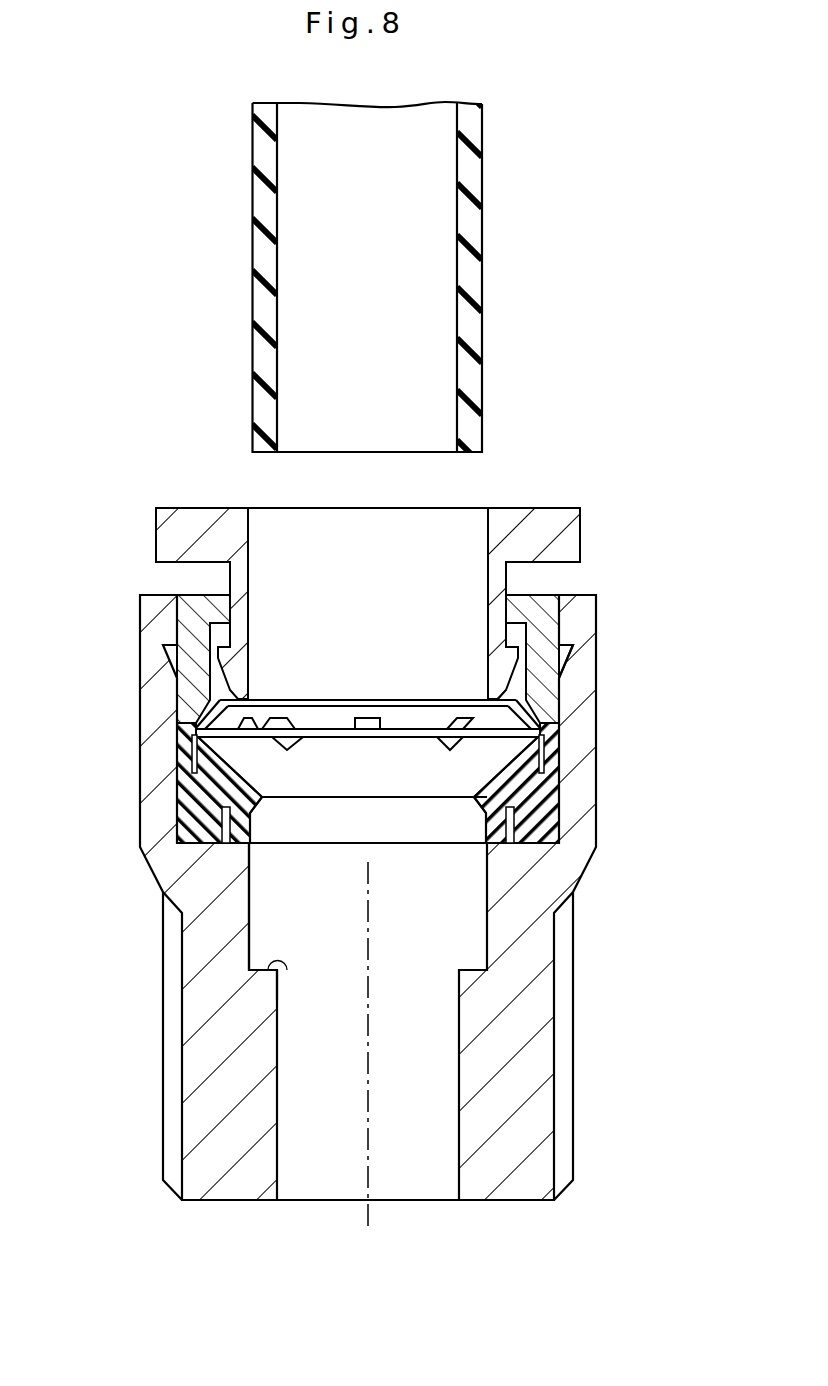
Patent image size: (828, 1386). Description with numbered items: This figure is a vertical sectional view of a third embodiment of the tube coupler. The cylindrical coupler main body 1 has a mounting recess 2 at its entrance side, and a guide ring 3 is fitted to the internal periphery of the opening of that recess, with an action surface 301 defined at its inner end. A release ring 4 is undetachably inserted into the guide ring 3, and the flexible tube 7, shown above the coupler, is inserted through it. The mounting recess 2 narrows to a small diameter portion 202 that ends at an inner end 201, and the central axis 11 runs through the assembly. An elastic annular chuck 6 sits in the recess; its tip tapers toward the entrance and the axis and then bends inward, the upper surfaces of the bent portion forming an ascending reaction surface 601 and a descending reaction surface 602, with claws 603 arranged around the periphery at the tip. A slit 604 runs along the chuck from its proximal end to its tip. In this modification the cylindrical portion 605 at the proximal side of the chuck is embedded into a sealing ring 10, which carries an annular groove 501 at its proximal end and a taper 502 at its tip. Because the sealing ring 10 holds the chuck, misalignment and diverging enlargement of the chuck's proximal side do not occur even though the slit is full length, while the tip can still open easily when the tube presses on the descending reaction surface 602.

The coupler main body 1 is at (399, 897).
The mounting recess 2 is at (340, 1035).
The guide ring 3 is at (552, 608).
The release ring 4 is at (550, 520).
The annular chuck 6 is at (363, 771).
The flexible tube 7 is at (253, 270).
The sealing ring 10 is at (557, 806).
The central axis 11 is at (372, 1079).
The inner end 201 is at (279, 973).
The small diameter portion 202 is at (254, 892).
The action surface 301 is at (548, 722).
The annular groove 501 is at (512, 842).
The taper 502 is at (477, 797).
The ascending reaction surface 601 is at (552, 697).
The descending reaction surface 602 is at (500, 712).
The claws 603 is at (288, 751).
The slit 604 is at (180, 724).
The cylindrical portion 605 is at (545, 760).